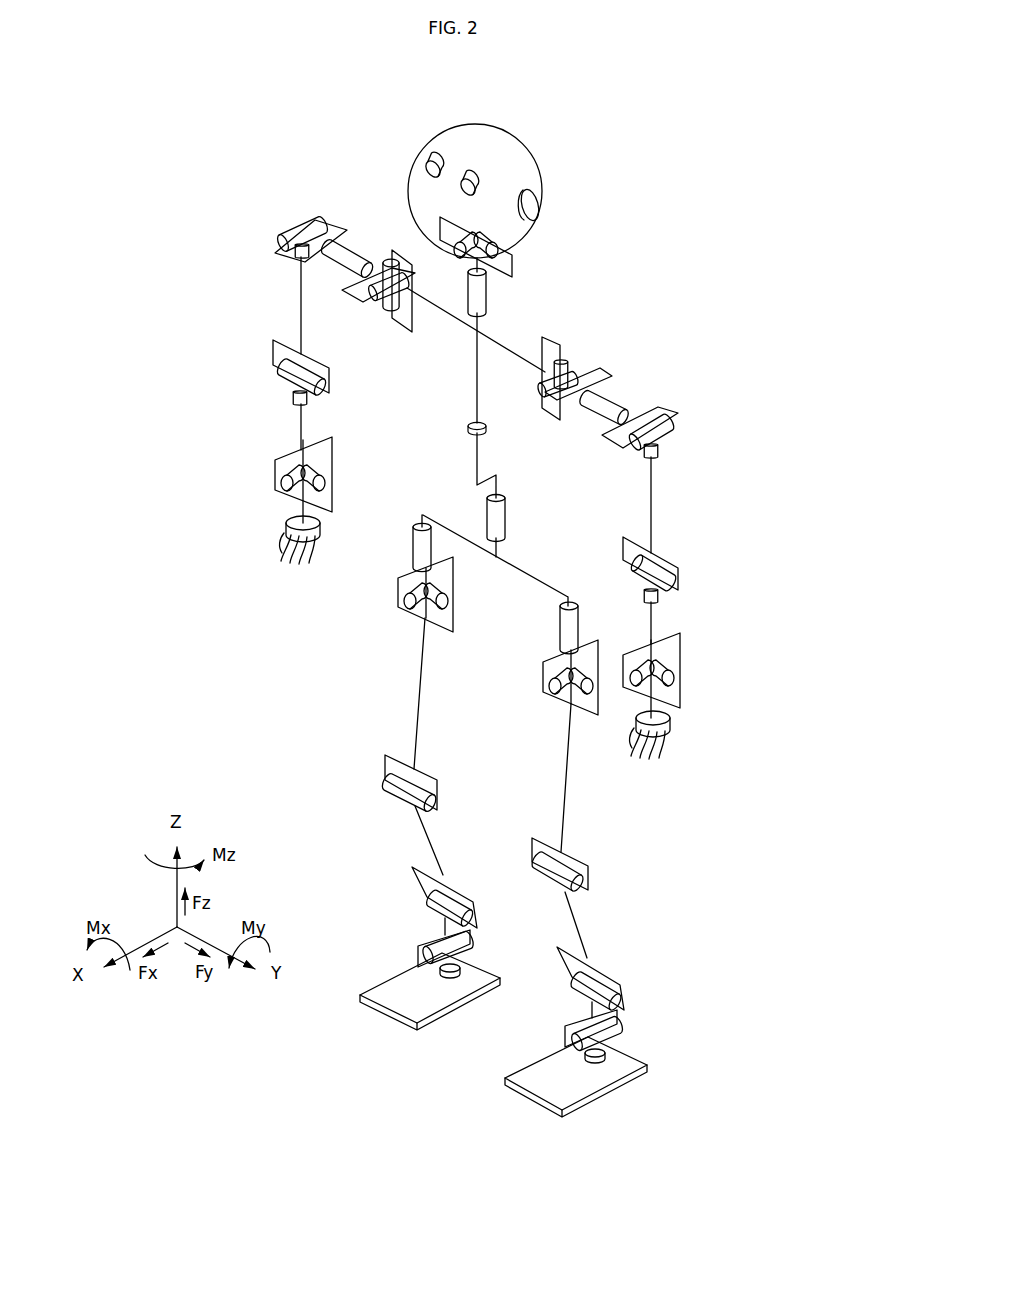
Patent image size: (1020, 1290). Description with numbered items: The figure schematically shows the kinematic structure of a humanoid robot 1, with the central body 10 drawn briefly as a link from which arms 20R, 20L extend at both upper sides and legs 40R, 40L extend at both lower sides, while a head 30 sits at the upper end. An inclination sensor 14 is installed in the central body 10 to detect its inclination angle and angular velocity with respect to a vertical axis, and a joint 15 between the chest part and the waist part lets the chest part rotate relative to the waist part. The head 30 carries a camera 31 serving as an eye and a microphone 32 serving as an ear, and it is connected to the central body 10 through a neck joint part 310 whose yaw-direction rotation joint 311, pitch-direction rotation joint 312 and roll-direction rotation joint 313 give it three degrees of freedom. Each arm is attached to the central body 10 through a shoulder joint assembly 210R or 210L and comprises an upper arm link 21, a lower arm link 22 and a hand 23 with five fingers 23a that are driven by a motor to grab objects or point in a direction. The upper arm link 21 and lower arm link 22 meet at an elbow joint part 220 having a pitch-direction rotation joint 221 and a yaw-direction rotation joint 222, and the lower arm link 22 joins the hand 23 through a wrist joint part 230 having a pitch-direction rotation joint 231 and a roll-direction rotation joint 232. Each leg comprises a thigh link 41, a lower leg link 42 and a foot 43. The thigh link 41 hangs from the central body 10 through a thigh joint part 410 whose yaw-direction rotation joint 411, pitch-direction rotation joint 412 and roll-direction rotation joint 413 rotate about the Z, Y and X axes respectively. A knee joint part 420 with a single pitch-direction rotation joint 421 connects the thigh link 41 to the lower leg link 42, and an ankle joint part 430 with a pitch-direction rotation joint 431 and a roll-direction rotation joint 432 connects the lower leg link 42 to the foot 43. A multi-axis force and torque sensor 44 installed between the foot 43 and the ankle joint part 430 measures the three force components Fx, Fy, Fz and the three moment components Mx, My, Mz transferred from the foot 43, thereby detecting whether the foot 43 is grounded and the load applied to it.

The humanoid robot 1 is at (757, 140).
The central body 10 is at (477, 428).
The inclination sensor 14 is at (486, 432).
The joint 15 is at (505, 517).
The right arm 20R is at (244, 354).
The left arm 20L is at (700, 536).
The upper arm link 21 is at (300, 298).
The lower arm link 22 is at (300, 418).
The hand 23 is at (486, 637).
The finger 23a is at (293, 558).
The head 30 is at (484, 172).
The camera 31 is at (462, 180).
The microphone 32 is at (534, 205).
The right leg 40R is at (325, 730).
The left leg 40L is at (620, 813).
The thigh link 41 is at (418, 704).
The lower leg link 42 is at (427, 852).
The foot 43 is at (385, 1010).
The multi-axis force and torque sensor 44 is at (455, 990).
The right shoulder joint assembly 210R is at (302, 210).
The left shoulder joint assembly 210L is at (617, 362).
The elbow joint part 220 is at (458, 458).
The pitch-direction rotation joint 221 is at (312, 360).
The yaw-direction rotation joint 222 is at (316, 398).
The wrist joint part 230 is at (481, 577).
The pitch-direction rotation joint 231 is at (328, 481).
The roll-direction rotation joint 232 is at (318, 465).
The neck joint part 310 is at (493, 267).
The yaw-direction rotation joint 311 is at (484, 296).
The pitch-direction rotation joint 312 is at (505, 244).
The roll-direction rotation joint 313 is at (434, 245).
The thigh joint part 410 is at (451, 649).
The yaw-direction rotation joint 411 is at (420, 548).
The pitch-direction rotation joint 412 is at (450, 602).
The roll-direction rotation joint 413 is at (412, 610).
The knee joint part 420 is at (497, 815).
The pitch-direction rotation joint 421 is at (415, 790).
The ankle joint part 430 is at (528, 959).
The pitch-direction rotation joint 431 is at (480, 918).
The roll-direction rotation joint 432 is at (465, 945).